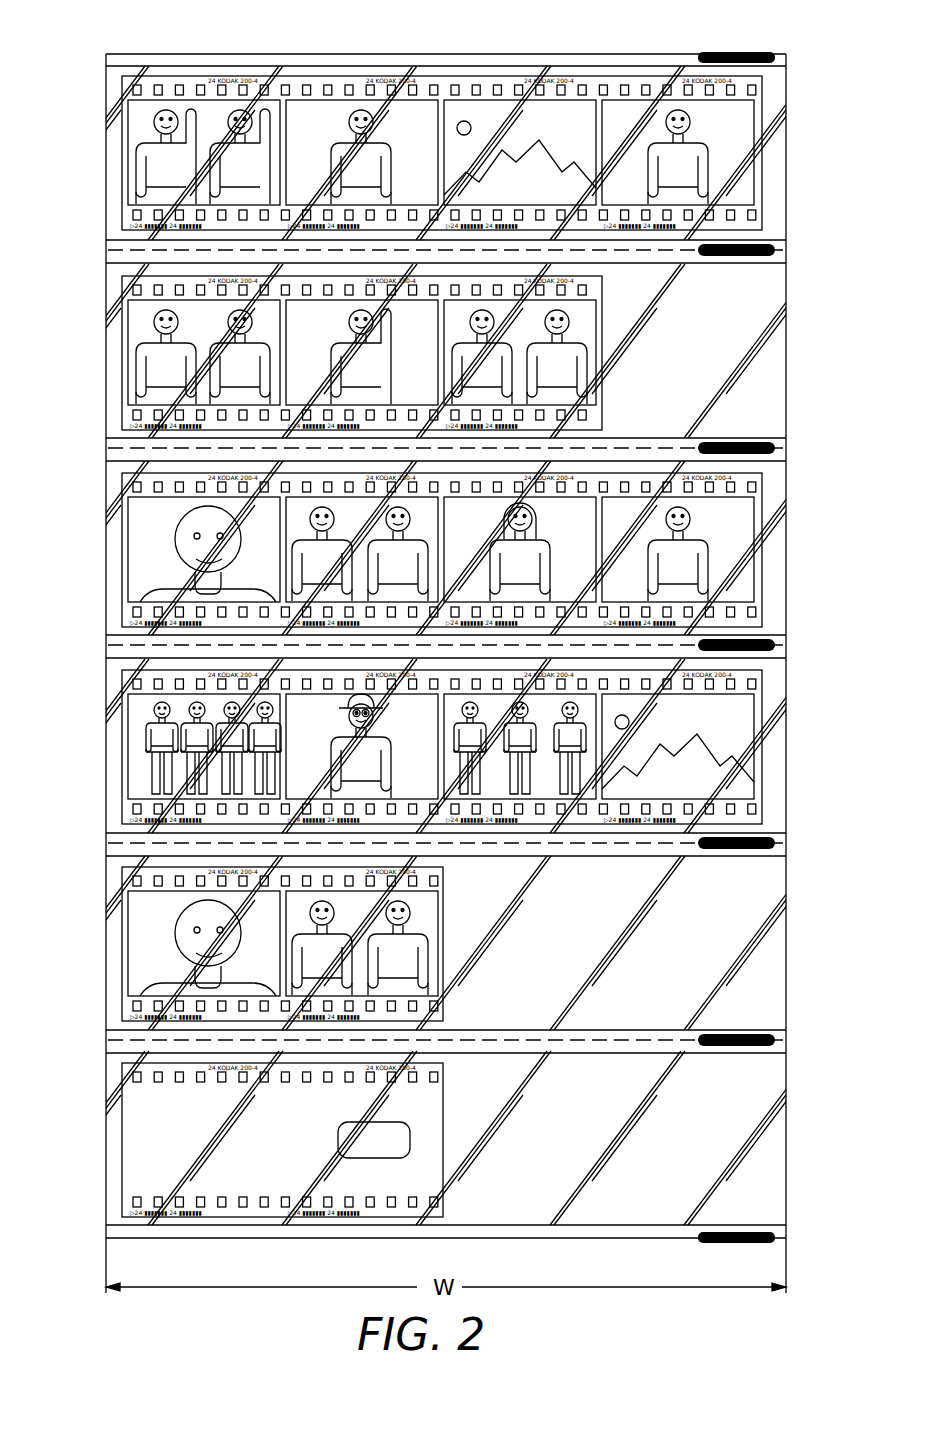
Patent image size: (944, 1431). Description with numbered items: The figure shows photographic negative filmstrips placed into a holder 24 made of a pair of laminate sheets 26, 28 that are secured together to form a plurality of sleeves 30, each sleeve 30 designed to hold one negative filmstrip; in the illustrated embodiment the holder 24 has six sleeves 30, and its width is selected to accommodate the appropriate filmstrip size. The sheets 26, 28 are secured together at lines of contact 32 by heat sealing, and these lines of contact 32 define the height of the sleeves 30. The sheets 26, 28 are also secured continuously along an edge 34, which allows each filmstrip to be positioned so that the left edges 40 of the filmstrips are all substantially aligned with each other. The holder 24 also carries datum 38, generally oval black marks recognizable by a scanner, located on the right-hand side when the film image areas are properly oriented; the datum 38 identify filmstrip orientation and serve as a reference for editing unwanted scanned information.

The holder 24 is at (472, 53).
The laminate sheet 26 is at (773, 952).
The laminate sheet 28 is at (763, 985).
The sleeve 30 is at (818, 1137).
The line of contact 32 is at (650, 54).
The edge 34 is at (108, 703).
The datum 38 is at (828, 1043).
The left edge 40 is at (122, 1151).